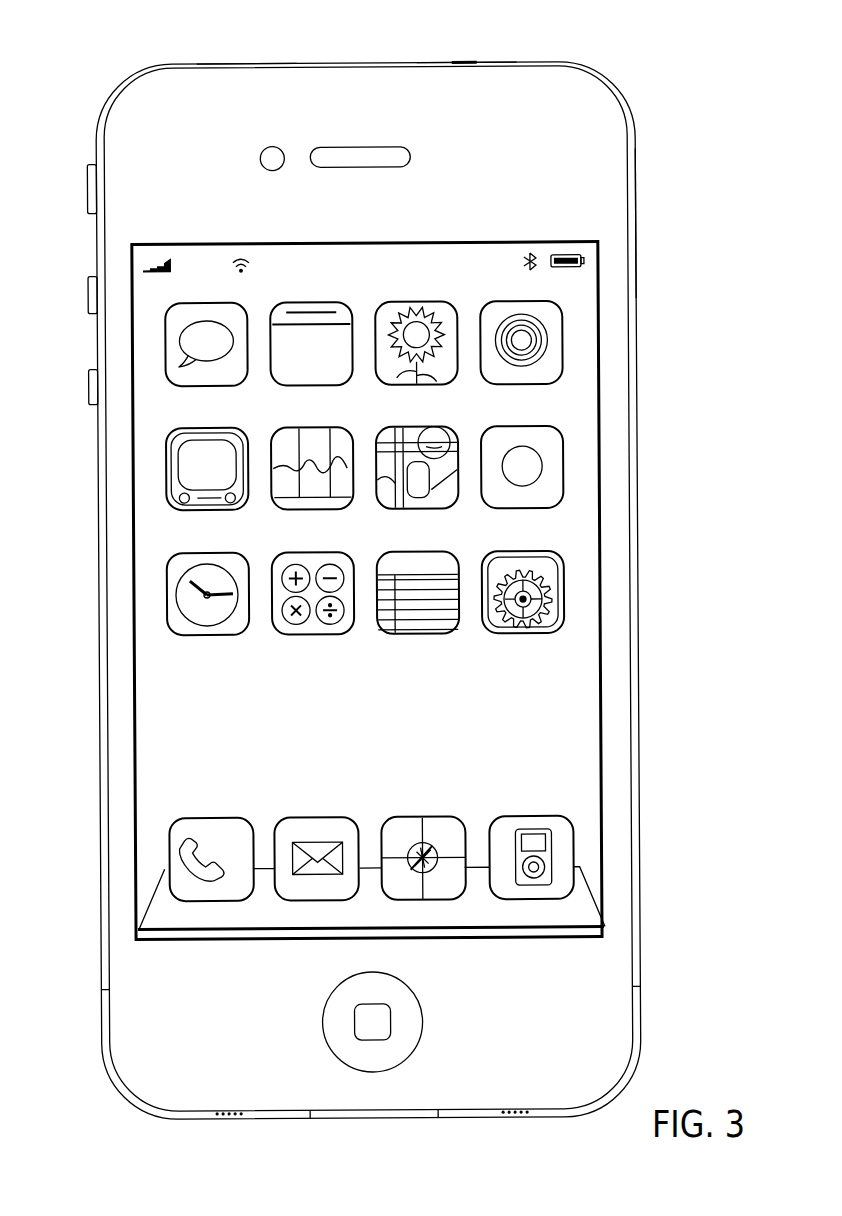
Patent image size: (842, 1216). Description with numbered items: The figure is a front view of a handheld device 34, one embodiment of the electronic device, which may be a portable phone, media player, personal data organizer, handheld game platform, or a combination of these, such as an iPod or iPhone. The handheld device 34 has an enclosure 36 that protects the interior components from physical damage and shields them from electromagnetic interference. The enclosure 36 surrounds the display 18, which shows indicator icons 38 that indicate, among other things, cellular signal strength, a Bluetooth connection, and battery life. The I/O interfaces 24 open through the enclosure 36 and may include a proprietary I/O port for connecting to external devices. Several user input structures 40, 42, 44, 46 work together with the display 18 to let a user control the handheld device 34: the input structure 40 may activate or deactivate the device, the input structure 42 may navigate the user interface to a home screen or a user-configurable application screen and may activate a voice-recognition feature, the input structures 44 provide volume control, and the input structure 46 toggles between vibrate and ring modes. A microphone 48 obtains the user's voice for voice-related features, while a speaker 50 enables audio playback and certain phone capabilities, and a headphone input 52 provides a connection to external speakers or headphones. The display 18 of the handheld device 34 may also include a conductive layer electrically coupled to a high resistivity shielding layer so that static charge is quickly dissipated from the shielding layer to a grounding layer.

The handheld device 34 is at (178, 24).
The headphone input 52 is at (238, 65).
The input structure 40 is at (480, 63).
The enclosure 36 is at (638, 233).
The microphone 48 is at (370, 148).
The I/O interfaces 24 is at (358, 1120).
The speaker 50 is at (520, 1114).
The input structure 46 is at (90, 205).
The input structures 44 is at (90, 290).
The input structure 42 is at (420, 1028).
The display 18 is at (606, 554).
The indicator icons 38 is at (172, 262).